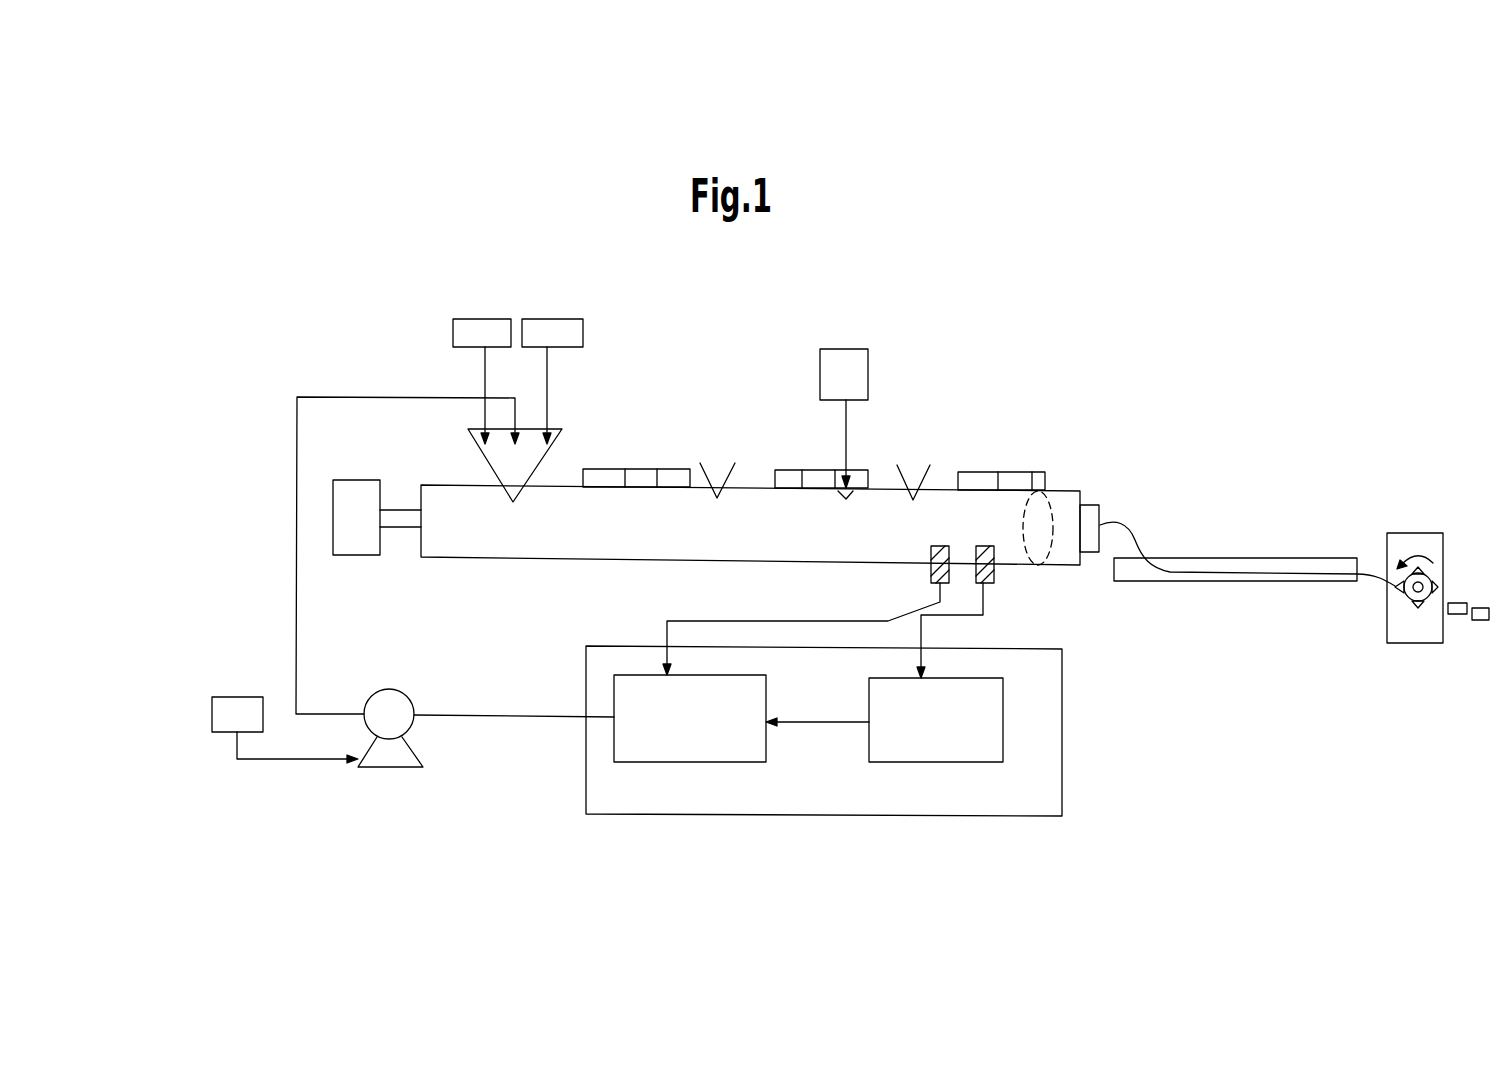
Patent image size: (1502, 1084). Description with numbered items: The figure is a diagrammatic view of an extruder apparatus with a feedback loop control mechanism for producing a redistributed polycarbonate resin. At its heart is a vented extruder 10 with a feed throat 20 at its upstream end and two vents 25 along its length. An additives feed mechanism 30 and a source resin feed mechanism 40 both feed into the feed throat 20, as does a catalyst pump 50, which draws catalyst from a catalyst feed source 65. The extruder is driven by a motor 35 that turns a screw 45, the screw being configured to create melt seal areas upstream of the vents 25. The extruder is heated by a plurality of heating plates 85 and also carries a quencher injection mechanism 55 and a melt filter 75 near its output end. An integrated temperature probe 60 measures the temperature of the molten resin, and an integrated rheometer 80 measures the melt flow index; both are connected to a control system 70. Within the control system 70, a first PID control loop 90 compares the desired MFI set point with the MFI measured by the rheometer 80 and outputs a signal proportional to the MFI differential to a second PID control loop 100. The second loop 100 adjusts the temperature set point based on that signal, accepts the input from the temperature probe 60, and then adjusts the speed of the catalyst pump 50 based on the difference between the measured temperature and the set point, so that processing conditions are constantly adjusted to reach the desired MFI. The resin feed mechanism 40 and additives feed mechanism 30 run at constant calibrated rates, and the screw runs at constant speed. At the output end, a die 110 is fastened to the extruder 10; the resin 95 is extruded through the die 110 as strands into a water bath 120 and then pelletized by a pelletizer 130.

The vented extruder 10 is at (480, 557).
The feed throat 20 is at (545, 456).
The vents 25 is at (727, 475).
The additives feed mechanism 30 is at (552, 381).
The motor 35 is at (354, 556).
The source resin feed mechanism 40 is at (482, 381).
The screw 45 is at (398, 508).
The catalyst pump 50 is at (406, 690).
The quencher injection mechanism 55 is at (868, 349).
The temperature probe 60 is at (930, 570).
The catalyst feed source 65 is at (212, 705).
The control system 70 is at (1062, 730).
The melt filter 75 is at (1032, 492).
The rheometer 80 is at (994, 570).
The heating plates 85 is at (640, 470).
The first PID control loop 90 is at (972, 678).
The resin 95 is at (1135, 528).
The second PID control loop 100 is at (732, 762).
The die 110 is at (1100, 506).
The water bath 120 is at (1188, 557).
The pelletizer 130 is at (1412, 533).